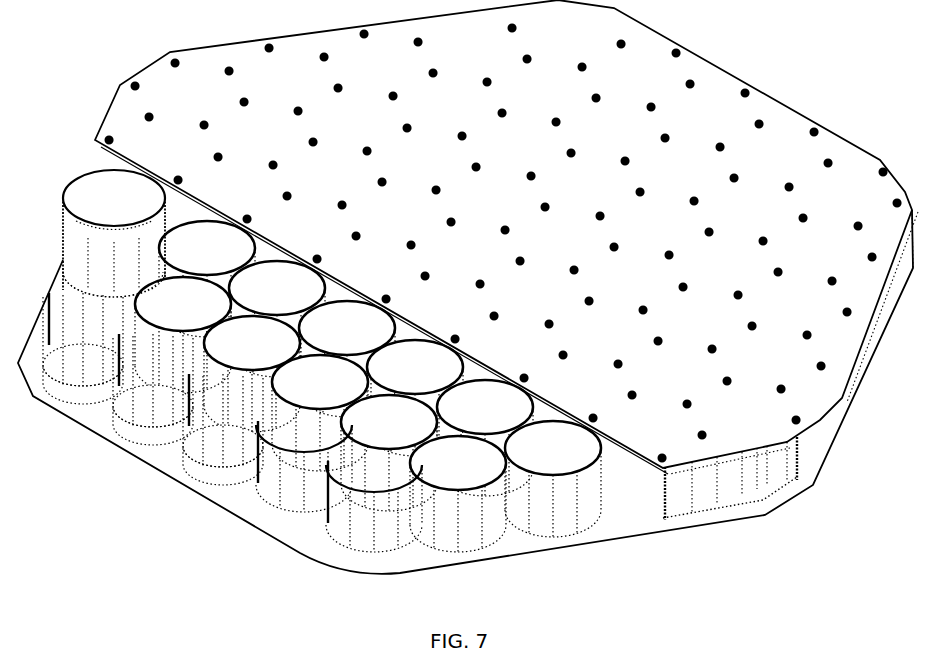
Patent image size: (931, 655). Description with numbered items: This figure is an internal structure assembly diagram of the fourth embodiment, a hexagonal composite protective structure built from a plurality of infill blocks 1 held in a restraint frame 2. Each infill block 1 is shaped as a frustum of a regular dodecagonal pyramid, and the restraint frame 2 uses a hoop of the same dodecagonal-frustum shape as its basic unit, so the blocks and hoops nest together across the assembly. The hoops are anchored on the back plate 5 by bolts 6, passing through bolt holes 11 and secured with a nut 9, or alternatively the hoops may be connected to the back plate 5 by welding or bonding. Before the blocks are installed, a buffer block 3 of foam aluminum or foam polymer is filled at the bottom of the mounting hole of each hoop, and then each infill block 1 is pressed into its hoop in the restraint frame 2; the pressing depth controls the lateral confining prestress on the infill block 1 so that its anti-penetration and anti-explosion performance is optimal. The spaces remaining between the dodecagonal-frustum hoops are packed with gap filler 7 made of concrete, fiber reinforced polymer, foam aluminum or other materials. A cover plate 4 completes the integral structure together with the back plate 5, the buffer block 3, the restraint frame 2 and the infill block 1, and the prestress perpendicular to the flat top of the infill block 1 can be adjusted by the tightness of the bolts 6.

The infill block 1 is at (95, 198).
The restraint frame 2 is at (467, 510).
The buffer block 3 is at (198, 448).
The cover plate 4 is at (260, 75).
The back plate 5 is at (283, 515).
The bolts 6 is at (657, 490).
The gap filler 7 is at (133, 311).
The nut 9 is at (165, 52).
The bolt holes 11 is at (75, 283).